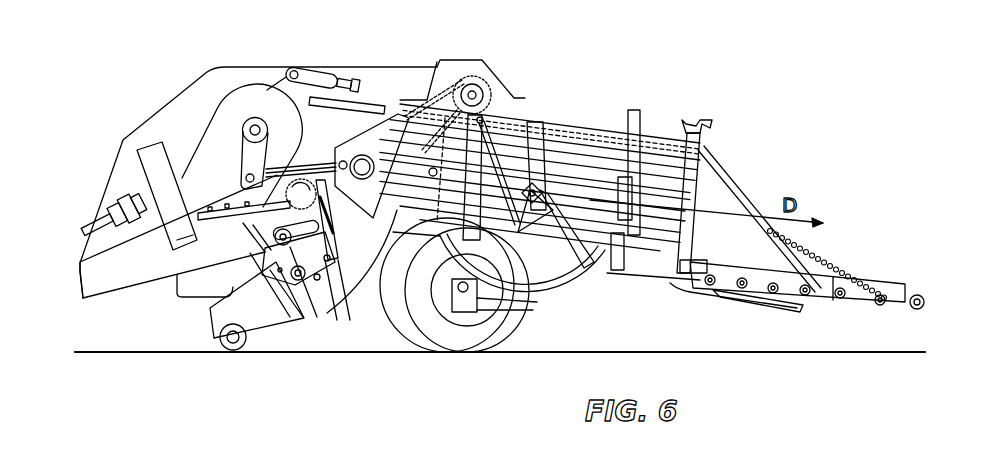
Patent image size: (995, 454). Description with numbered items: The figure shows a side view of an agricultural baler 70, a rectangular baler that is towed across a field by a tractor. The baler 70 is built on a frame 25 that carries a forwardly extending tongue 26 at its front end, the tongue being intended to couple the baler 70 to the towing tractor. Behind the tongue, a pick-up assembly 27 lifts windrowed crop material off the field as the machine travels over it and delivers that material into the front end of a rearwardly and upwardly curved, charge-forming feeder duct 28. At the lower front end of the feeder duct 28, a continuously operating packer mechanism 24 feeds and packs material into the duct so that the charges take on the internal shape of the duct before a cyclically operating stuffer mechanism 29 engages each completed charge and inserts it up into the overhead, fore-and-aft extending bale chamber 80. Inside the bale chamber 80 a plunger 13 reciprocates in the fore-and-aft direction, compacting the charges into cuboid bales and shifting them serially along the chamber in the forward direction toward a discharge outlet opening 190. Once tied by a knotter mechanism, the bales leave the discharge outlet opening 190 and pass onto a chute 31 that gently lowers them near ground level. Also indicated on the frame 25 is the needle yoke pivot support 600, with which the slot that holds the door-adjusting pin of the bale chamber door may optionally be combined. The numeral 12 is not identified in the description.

The plunger 13 is at (378, 138).
The needle yoke pivot support 600 is at (543, 160).
The bale chamber 80 is at (643, 170).
The agricultural baler 70 is at (700, 57).
The discharge outlet opening 190 is at (710, 197).
The chute 31 is at (842, 247).
The frame 12 is at (652, 262).
The frame 25 is at (354, 220).
The tongue 26 is at (138, 275).
The pick-up assembly 27 is at (272, 340).
The packer mechanism 24 is at (323, 312).
The feeder duct 28 is at (337, 312).
The stuffer mechanism 29 is at (350, 300).